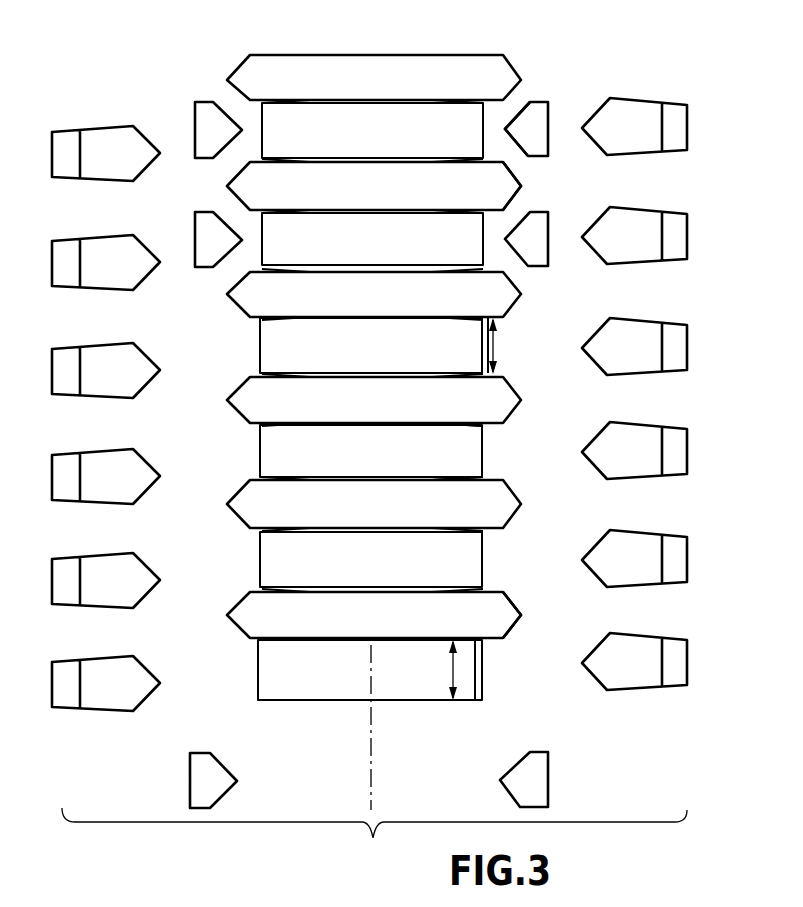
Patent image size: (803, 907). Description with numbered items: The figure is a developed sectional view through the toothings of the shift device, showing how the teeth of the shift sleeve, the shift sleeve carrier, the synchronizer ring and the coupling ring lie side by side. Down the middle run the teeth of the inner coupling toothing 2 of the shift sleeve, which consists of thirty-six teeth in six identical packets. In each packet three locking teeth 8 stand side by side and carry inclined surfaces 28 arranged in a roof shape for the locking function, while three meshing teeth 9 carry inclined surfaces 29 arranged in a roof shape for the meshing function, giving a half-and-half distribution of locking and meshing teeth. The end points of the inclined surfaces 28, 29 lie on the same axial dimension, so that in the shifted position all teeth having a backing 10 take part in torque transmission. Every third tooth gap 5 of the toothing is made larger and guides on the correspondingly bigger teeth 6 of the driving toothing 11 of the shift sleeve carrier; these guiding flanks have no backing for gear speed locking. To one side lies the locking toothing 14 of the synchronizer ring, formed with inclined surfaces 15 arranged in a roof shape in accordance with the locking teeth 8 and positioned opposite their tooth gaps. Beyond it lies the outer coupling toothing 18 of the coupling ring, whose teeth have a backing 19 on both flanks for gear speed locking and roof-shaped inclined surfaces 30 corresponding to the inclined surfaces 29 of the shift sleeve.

The inner coupling toothing 2 is at (362, 50).
The tooth gaps 5 is at (497, 345).
The teeth of the driving toothing 6 is at (278, 352).
The locking teeth 8 is at (387, 95).
The meshing teeth 9 is at (387, 415).
The backing 10 is at (492, 478).
The driving toothing 11 is at (336, 706).
The locking toothing 14 is at (558, 115).
The inclined surfaces of the locking toothing 15 is at (507, 125).
The outer coupling toothing 18 is at (698, 120).
The backing 19 is at (640, 585).
The inclined surfaces of the locking teeth 28 is at (523, 174).
The inclined surfaces of the meshing teeth 29 is at (523, 626).
The inclined surfaces of the coupling toothing 30 is at (590, 680).